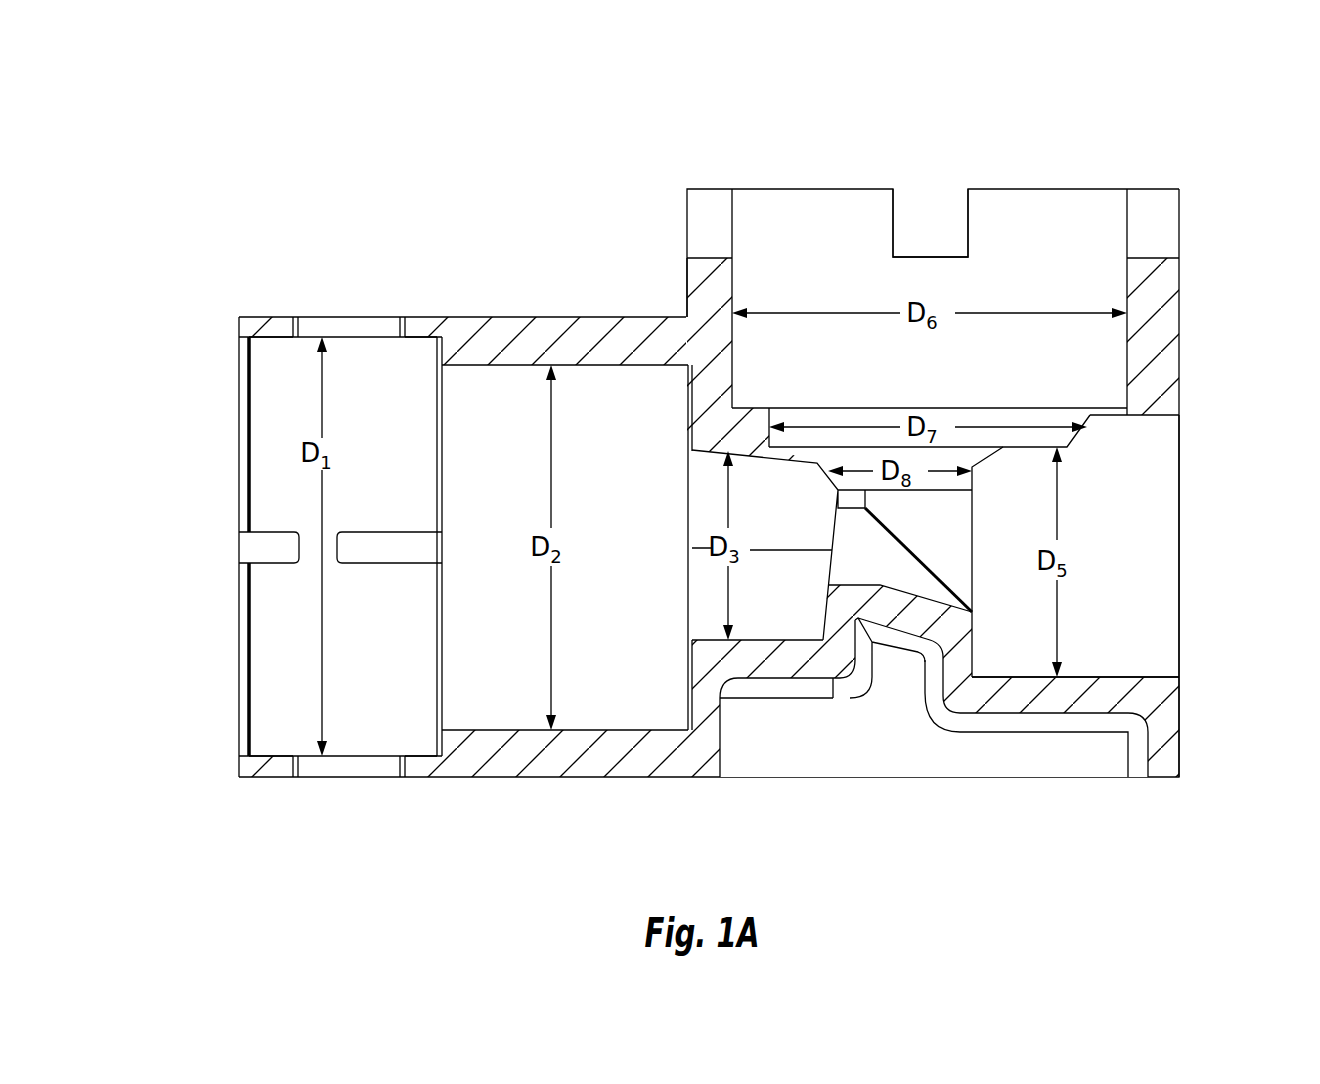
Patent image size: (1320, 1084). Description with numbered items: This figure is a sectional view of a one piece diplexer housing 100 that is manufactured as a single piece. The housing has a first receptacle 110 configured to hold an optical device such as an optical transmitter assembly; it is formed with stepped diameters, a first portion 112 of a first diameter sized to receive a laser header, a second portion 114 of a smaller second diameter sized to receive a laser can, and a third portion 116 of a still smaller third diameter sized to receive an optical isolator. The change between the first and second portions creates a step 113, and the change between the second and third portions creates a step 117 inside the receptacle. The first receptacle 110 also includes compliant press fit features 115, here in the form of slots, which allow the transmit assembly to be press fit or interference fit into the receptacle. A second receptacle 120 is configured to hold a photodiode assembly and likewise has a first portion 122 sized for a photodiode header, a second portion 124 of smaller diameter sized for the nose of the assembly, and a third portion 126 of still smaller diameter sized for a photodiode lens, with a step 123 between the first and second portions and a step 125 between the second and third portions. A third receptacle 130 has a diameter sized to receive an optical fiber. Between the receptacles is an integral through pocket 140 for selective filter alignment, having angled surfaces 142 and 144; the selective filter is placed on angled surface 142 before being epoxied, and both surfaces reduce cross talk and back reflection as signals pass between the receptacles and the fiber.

The single piece diplexer housing 100 is at (1140, 76).
The first receptacle 110 is at (220, 360).
The first portion 112 is at (237, 680).
The step 113 is at (452, 345).
The second portion 114 is at (554, 765).
The compliant press fit features 115 is at (332, 766).
The third portion 116 is at (765, 640).
The step 117 is at (700, 437).
The second receptacle 120 is at (773, 170).
The first portion 122 is at (1085, 208).
The step 123 is at (745, 440).
The second portion 124 is at (1070, 443).
The step 125 is at (730, 448).
The third portion 126 is at (975, 488).
The third receptacle 130 is at (1180, 537).
The pocket 140 is at (945, 565).
The angled surface 142 is at (912, 560).
The angled surface 144 is at (898, 575).